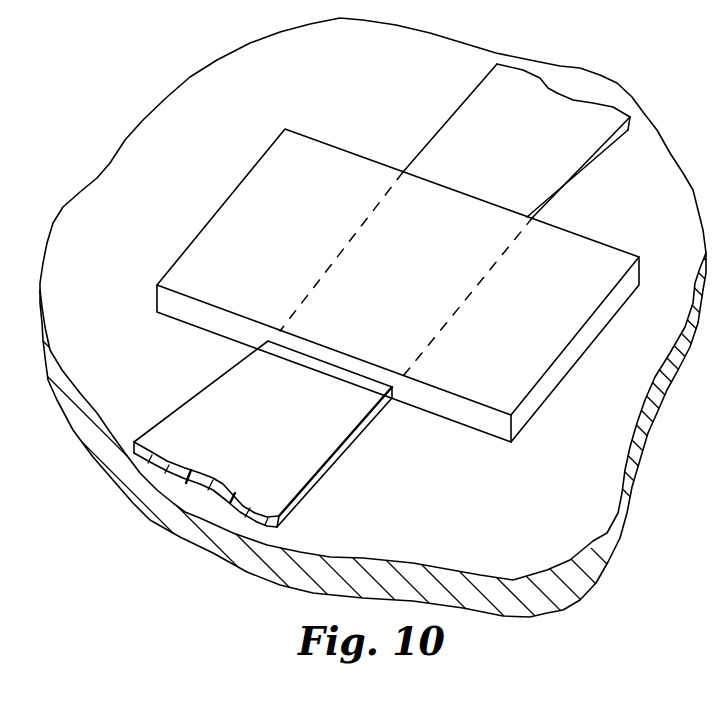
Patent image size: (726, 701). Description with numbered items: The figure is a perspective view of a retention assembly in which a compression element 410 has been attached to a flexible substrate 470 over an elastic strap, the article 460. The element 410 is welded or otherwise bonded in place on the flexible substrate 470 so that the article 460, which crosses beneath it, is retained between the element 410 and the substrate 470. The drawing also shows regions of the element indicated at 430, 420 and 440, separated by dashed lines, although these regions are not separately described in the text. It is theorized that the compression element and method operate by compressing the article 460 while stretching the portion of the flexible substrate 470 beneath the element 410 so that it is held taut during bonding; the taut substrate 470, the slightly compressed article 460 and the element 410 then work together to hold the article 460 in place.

The compression element 410 is at (603, 224).
The plate 420 is at (422, 276).
The first region of plate 430 is at (301, 236).
The second region of plate 440 is at (543, 322).
The article 460 is at (536, 156).
The flexible substrate 470 is at (171, 206).